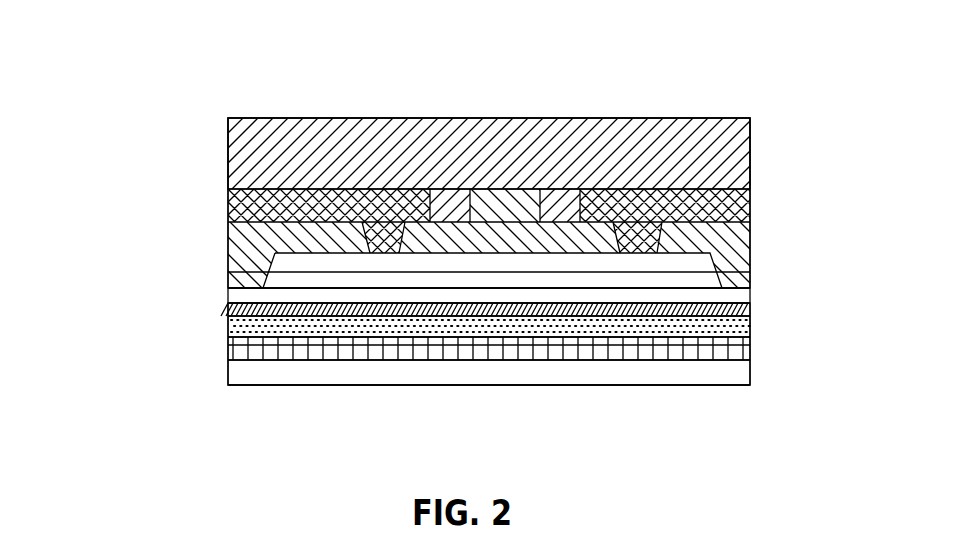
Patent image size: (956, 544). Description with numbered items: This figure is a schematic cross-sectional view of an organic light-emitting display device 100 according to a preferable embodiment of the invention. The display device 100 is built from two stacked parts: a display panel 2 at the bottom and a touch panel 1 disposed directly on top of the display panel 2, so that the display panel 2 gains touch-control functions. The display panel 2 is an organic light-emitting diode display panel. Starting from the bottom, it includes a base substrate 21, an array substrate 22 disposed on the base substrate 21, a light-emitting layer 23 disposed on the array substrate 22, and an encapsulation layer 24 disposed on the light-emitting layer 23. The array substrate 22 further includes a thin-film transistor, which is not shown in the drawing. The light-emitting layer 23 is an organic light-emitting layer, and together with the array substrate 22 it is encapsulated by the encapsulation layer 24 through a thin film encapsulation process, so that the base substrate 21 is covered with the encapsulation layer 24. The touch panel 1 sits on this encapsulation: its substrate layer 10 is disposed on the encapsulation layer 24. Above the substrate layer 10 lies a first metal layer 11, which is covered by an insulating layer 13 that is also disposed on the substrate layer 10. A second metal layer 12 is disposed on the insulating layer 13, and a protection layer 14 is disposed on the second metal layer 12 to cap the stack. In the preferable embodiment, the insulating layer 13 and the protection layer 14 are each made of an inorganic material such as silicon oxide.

The display device 100 is at (145, 101).
The touch panel 1 is at (138, 149).
The display panel 2 is at (152, 308).
The protection layer 14 is at (245, 163).
The second metal layer 12 is at (235, 210).
The insulating layer 13 is at (237, 243).
The first metal layer 11 is at (228, 272).
The substrate layer 10 is at (228, 292).
The encapsulation layer 24 is at (228, 308).
The light-emitting layer 23 is at (228, 329).
The array substrate 22 is at (228, 356).
The base substrate 21 is at (240, 375).